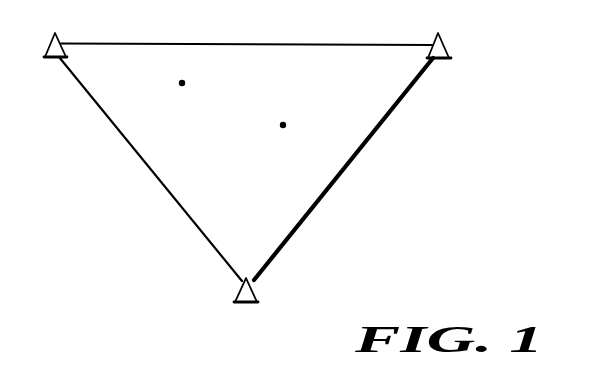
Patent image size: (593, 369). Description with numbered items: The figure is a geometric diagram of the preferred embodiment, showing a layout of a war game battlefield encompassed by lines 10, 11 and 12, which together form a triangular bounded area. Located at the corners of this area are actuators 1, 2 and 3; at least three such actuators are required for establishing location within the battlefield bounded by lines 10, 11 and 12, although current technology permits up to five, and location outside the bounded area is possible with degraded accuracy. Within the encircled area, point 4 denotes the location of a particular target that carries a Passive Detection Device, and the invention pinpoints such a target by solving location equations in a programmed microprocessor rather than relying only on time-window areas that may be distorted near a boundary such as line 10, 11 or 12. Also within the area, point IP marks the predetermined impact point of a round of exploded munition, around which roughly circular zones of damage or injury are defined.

The actuator 1 is at (243, 305).
The actuator 2 is at (49, 43).
The actuator 3 is at (445, 38).
The point 4 is at (181, 85).
The impact point IP is at (282, 127).
The line 10 is at (177, 202).
The line 11 is at (298, 43).
The line 12 is at (383, 120).